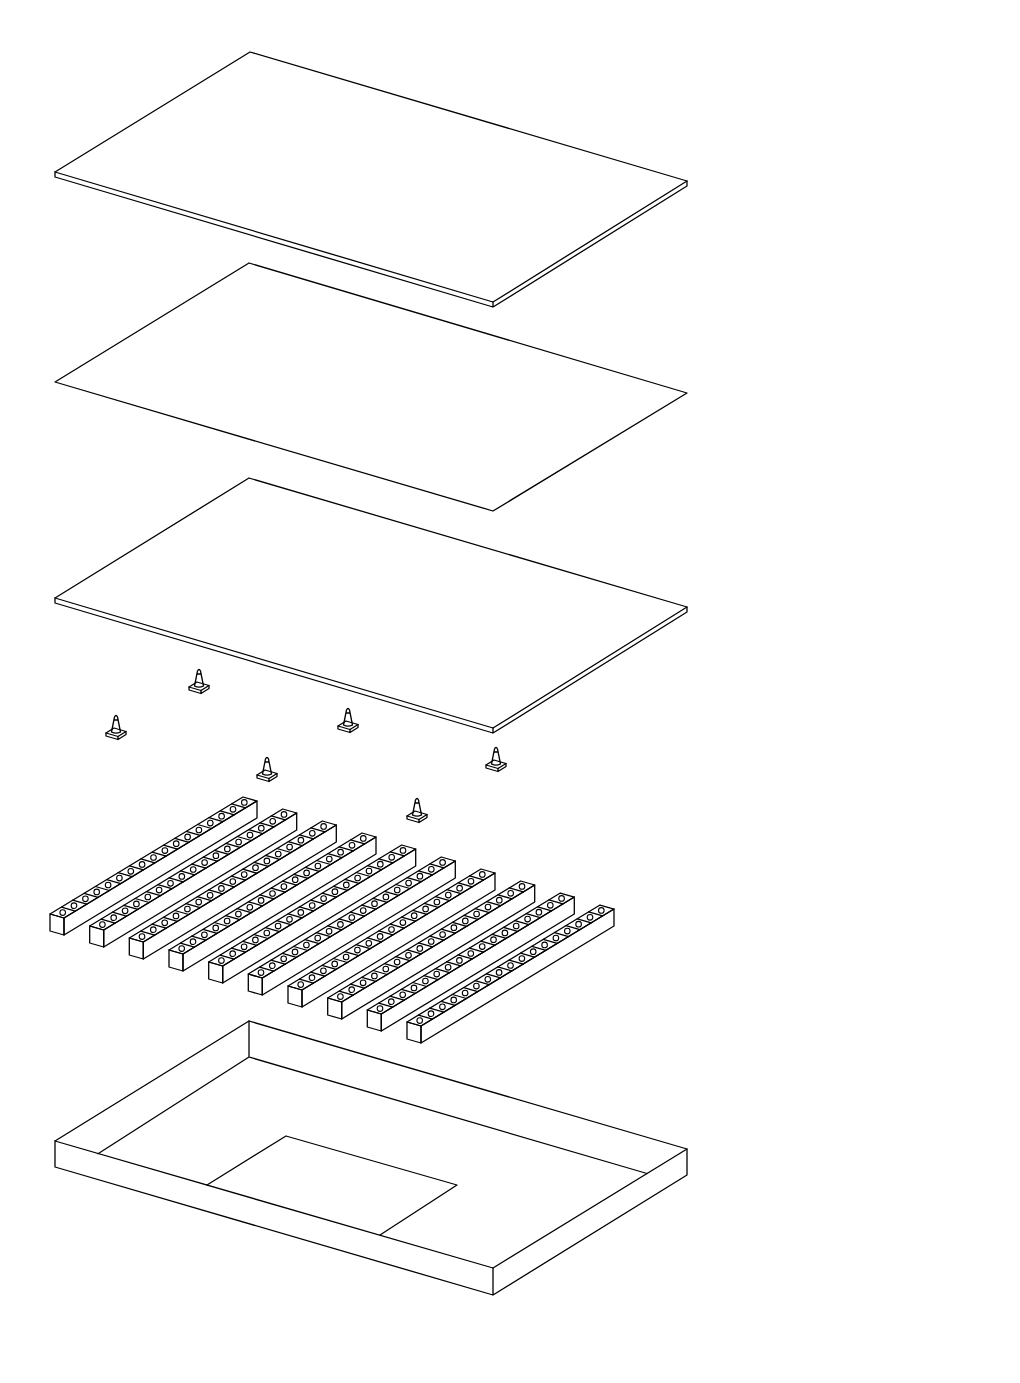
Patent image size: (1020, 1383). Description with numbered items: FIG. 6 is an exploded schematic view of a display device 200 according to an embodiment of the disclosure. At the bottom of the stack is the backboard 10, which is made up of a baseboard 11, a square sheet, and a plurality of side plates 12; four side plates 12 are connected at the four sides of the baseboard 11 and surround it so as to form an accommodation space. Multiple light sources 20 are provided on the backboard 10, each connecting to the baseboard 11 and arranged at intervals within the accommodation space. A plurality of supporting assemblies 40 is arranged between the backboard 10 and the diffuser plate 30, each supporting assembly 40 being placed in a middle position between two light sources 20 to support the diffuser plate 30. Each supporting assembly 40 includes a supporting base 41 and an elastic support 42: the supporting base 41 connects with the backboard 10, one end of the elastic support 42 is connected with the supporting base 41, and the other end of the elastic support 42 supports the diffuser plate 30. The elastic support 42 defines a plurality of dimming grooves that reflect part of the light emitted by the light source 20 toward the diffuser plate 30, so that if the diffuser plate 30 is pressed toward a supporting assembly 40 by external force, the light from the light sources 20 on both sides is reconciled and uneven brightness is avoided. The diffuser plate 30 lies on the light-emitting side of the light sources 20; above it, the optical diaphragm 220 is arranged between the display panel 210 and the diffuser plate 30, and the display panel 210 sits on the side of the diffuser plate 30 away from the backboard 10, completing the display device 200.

The display device 200 is at (403, 22).
The display panel 210 is at (560, 227).
The optical diaphragm 220 is at (560, 436).
The diffuser plate 30 is at (586, 641).
The supporting assembly 40 is at (309, 746).
The supporting base 41 is at (112, 737).
The elastic support 42 is at (112, 722).
The light source 20 is at (495, 980).
The backboard 10 is at (384, 1158).
The baseboard 11 is at (597, 1185).
The side plate 12 is at (371, 1158).